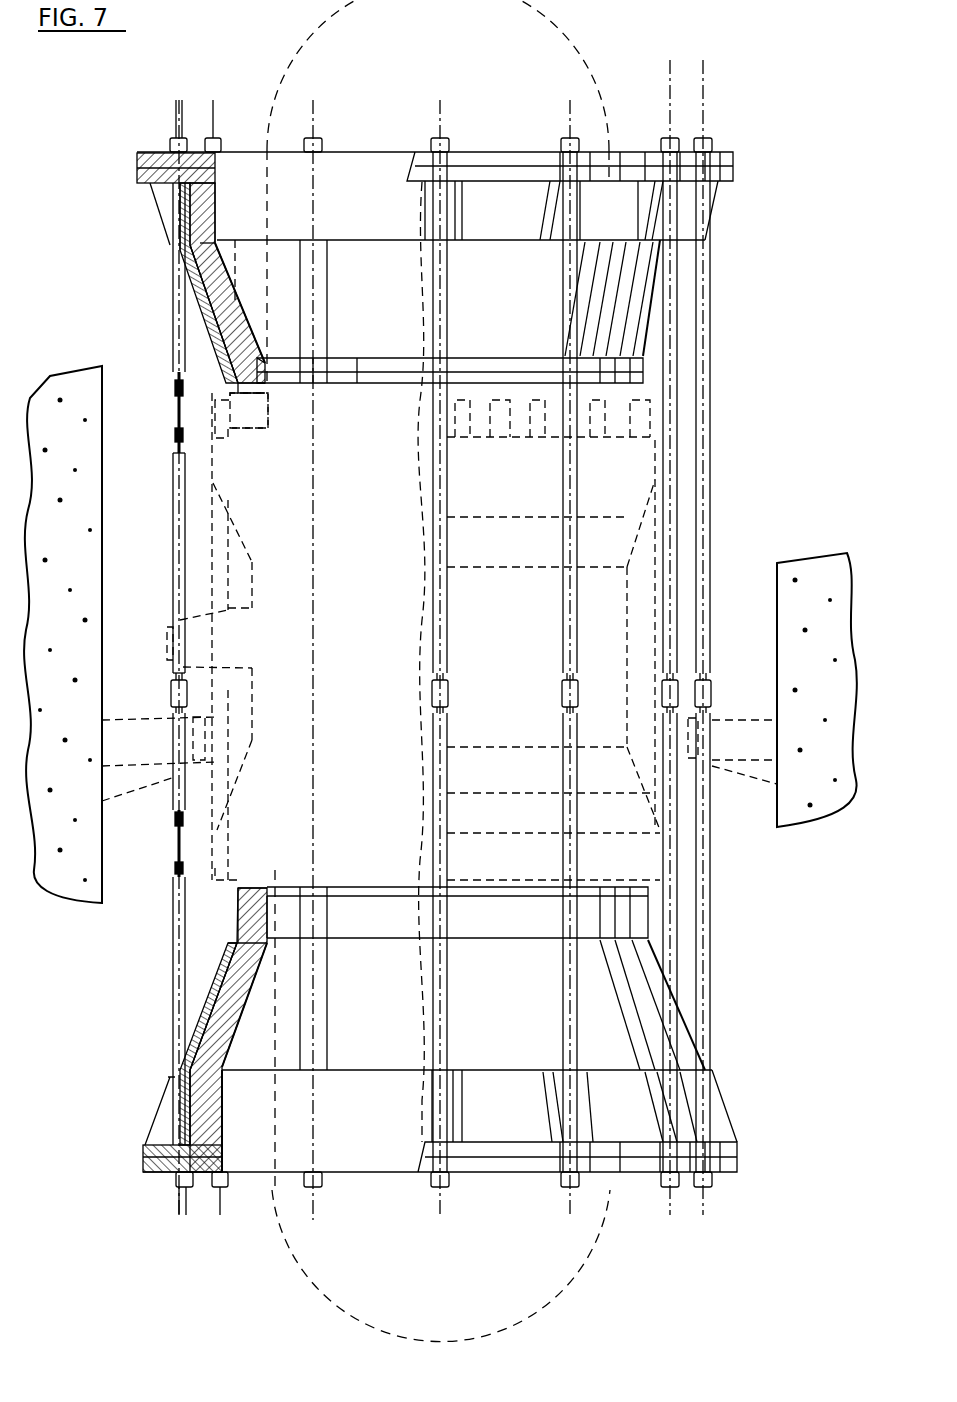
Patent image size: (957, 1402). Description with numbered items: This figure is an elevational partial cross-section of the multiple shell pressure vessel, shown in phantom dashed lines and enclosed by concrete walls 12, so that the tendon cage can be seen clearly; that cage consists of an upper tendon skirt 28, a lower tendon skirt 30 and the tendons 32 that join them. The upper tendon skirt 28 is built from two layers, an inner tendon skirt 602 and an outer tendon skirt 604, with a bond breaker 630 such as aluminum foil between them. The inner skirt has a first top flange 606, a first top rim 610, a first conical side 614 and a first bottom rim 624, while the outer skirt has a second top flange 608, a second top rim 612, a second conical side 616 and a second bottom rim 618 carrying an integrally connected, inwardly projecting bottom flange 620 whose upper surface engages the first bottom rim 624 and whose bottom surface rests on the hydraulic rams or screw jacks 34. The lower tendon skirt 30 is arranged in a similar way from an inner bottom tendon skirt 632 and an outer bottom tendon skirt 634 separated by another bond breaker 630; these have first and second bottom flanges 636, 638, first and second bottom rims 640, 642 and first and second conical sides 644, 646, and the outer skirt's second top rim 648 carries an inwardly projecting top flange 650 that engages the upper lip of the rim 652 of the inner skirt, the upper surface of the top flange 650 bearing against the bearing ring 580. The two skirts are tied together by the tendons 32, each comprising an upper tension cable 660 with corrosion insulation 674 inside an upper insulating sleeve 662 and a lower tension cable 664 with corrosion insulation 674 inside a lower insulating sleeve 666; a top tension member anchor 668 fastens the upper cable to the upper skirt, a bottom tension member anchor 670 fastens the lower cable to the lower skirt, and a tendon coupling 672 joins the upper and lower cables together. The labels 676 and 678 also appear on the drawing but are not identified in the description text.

The concrete walls 12 is at (83, 640).
The upper tendon skirt 28 is at (350, 152).
The lower tendon skirt 30 is at (366, 1176).
The tendons 32 is at (172, 311).
The hydraulic rams or screw jacks 34 is at (262, 417).
The bearing ring 580 is at (262, 878).
The inner tendon skirt 602 is at (222, 268).
The outer tendon skirt 604 is at (186, 279).
The first top flange 606 is at (137, 158).
The second top flange 608 is at (148, 180).
The first top rim 610 is at (217, 187).
The second top rim 612 is at (190, 212).
The first conical side 614 is at (245, 330).
The second conical side 616 is at (225, 330).
The second bottom rim 618 is at (236, 376).
The bottom flange 620 is at (255, 393).
The first bottom rim 624 is at (262, 364).
The bond breaker 630 is at (196, 262).
The inner bottom tendon skirt 632 is at (230, 1028).
The outer bottom tendon skirt 634 is at (205, 1020).
The first bottom flange 636 is at (145, 1168).
The second bottom flange 638 is at (145, 1150).
The first bottom rim 640 is at (224, 1092).
The second bottom rim 642 is at (192, 1117).
The first conical side 644 is at (250, 994).
The second conical side 646 is at (242, 952).
The second top rim 648 is at (242, 924).
The top flange 650 is at (262, 890).
The rim 652 is at (269, 912).
The upper tension cable 660 is at (176, 408).
The upper insulating sleeve 662 is at (174, 480).
The lower tension cable 664 is at (178, 852).
The lower insulating sleeve 666 is at (176, 813).
The top tension member anchor 668 is at (175, 144).
The bottom tension member anchor 670 is at (180, 1188).
The tendon coupling 672 is at (171, 695).
The corrosion insulation 674 is at (176, 433).
The gusset / brace 676 is at (168, 1082).
The cover plate 678 is at (156, 200).